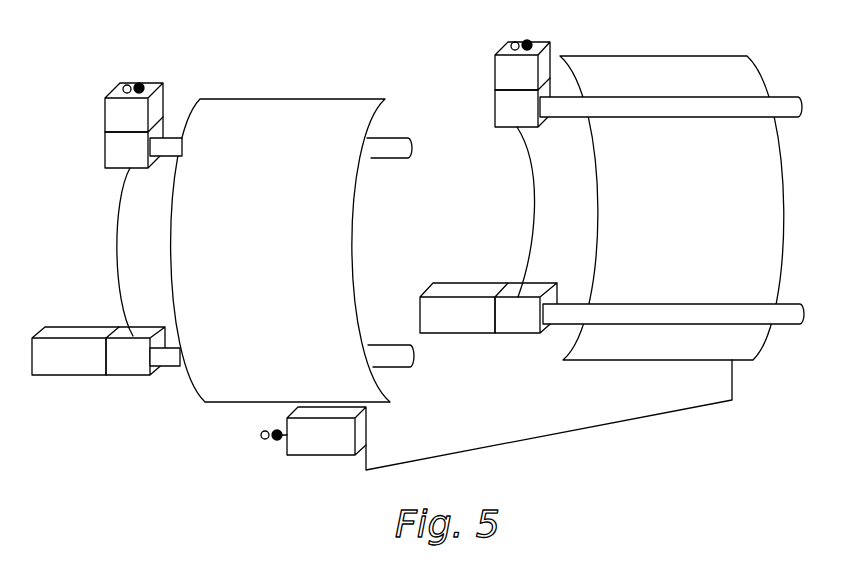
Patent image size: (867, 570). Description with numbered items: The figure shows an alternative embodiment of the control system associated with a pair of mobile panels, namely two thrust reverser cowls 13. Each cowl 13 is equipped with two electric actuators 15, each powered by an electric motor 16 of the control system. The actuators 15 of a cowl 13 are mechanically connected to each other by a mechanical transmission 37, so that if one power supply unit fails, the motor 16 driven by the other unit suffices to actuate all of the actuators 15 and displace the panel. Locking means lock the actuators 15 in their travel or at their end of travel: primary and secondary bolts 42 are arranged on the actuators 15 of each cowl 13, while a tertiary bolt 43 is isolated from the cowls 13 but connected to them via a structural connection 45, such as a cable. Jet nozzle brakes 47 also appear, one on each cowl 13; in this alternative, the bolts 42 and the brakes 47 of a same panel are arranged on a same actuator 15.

The thrust reverser cowl 13 is at (281, 259).
The actuator 15 is at (381, 150).
The motor 16 is at (331, 226).
The mechanical transmission 37 is at (118, 262).
The primary and secondary bolts 42 is at (270, 329).
The tertiary bolt 43 is at (313, 431).
The structural connection 45 is at (537, 436).
The jet nozzle brake 47 is at (327, 86).